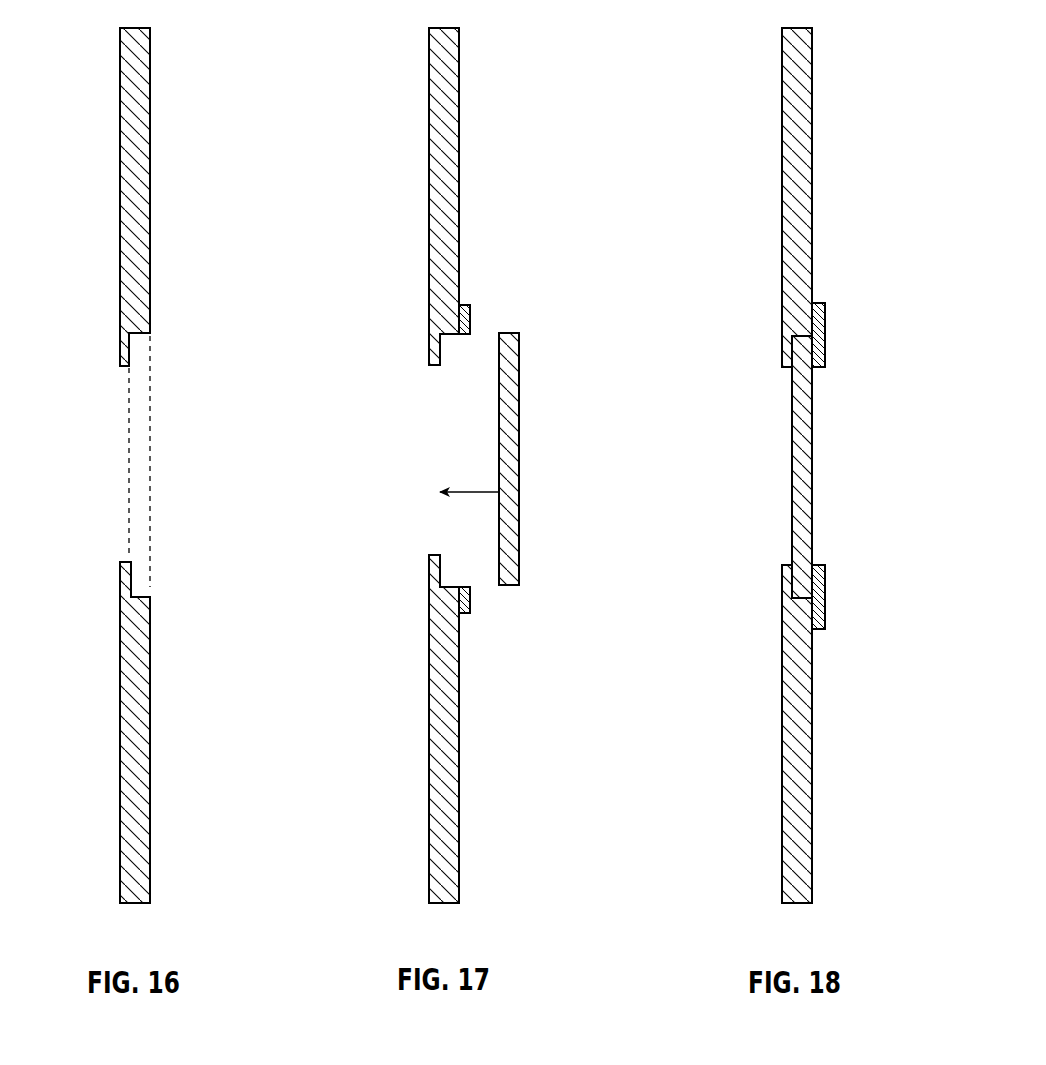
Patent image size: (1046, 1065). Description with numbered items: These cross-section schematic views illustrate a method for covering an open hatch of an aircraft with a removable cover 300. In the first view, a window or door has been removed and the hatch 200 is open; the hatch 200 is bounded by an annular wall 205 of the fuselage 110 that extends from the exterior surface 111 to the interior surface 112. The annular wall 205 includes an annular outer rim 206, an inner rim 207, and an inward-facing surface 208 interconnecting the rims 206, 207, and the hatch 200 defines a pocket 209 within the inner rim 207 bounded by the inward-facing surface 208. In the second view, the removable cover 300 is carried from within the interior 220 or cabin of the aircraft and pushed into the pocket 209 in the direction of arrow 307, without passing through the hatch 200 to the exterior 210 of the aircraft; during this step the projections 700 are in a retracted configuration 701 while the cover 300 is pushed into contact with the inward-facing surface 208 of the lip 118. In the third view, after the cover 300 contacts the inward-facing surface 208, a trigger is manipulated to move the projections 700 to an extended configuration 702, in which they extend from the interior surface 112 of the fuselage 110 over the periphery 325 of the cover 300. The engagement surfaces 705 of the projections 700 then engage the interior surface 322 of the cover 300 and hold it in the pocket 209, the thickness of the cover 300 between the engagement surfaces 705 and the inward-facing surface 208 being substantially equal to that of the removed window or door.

In FIG. 16, the fuselage 110 is at (128, 52).
In FIG. 17, the fuselage 110 is at (440, 72).
In FIG. 18, the fuselage 110 is at (790, 72).
In FIG. 16, the exterior surface 111 is at (120, 130).
In FIG. 17, the exterior surface 111 is at (429, 119).
In FIG. 18, the exterior surface 111 is at (782, 137).
In FIG. 16, the interior surface 112 is at (150, 115).
In FIG. 17, the interior surface 112 is at (460, 137).
In FIG. 18, the interior surface 112 is at (813, 173).
In FIG. 16, the lip 118 is at (121, 345).
In FIG. 16, the hatch 200 is at (96, 506).
In FIG. 16, the annular wall 205 is at (168, 571).
In FIG. 16, the annular outer rim 206 is at (123, 368).
In FIG. 16, the inner rim 207 is at (145, 333).
In FIG. 16, the inward-facing surface 208 is at (131, 346).
In FIG. 16, the pocket 209 is at (148, 451).
In FIG. 16, the exterior 210 is at (111, 842).
In FIG. 17, the exterior 210 is at (411, 803).
In FIG. 18, the exterior 210 is at (773, 842).
In FIG. 16, the interior 220 is at (205, 842).
In FIG. 17, the interior 220 is at (525, 803).
In FIG. 18, the interior 220 is at (871, 842).
In FIG. 17, the removable cover 300 is at (508, 427).
In FIG. 18, the removable cover 300 is at (800, 452).
In FIG. 17, the arrow 307 is at (487, 496).
In FIG. 18, the interior surface of the cover 322 is at (813, 496).
In FIG. 17, the periphery 325 is at (510, 332).
In FIG. 17, the projections 700 is at (470, 312).
In FIG. 17, the retracted configuration 701 is at (498, 605).
In FIG. 18, the extended configuration 702 is at (832, 618).
In FIG. 18, the engagement surfaces 705 is at (800, 350).